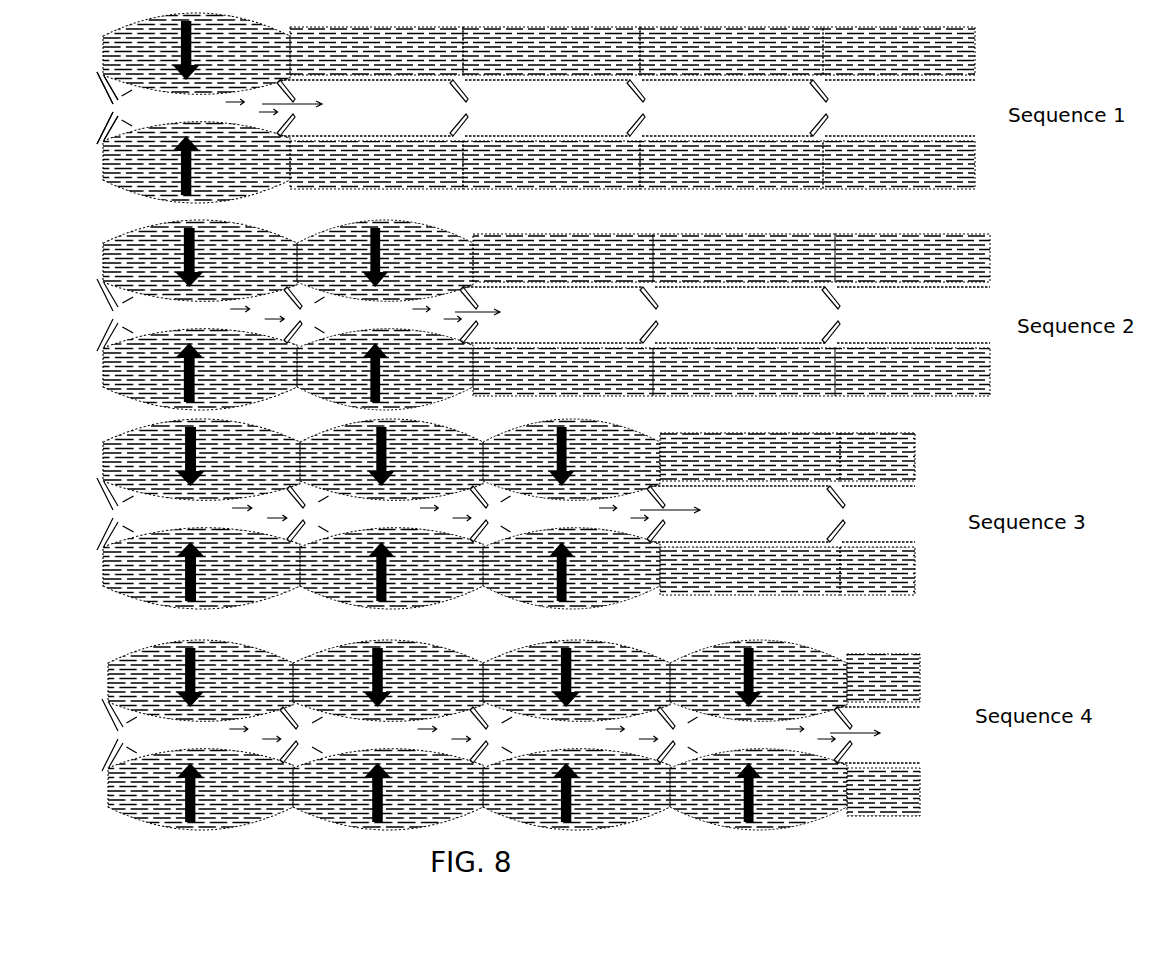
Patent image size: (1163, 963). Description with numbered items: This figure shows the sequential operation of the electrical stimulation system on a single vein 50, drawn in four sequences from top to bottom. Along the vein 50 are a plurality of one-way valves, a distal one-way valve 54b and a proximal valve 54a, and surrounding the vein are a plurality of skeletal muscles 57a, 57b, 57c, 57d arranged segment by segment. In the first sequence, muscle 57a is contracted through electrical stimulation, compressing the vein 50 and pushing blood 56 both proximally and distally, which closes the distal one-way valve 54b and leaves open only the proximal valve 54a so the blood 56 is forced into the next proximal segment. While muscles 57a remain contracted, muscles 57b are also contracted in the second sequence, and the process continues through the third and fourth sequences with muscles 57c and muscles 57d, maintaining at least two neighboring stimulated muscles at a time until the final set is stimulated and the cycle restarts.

The vein 50 is at (627, 108).
The proximal valve 54a is at (298, 97).
The distal one-way valve 54b is at (112, 112).
The blood 56 is at (499, 311).
The muscle 57a is at (251, 55).
The muscle 57b is at (395, 55).
The muscle 57c is at (578, 265).
The muscle 57d is at (758, 473).